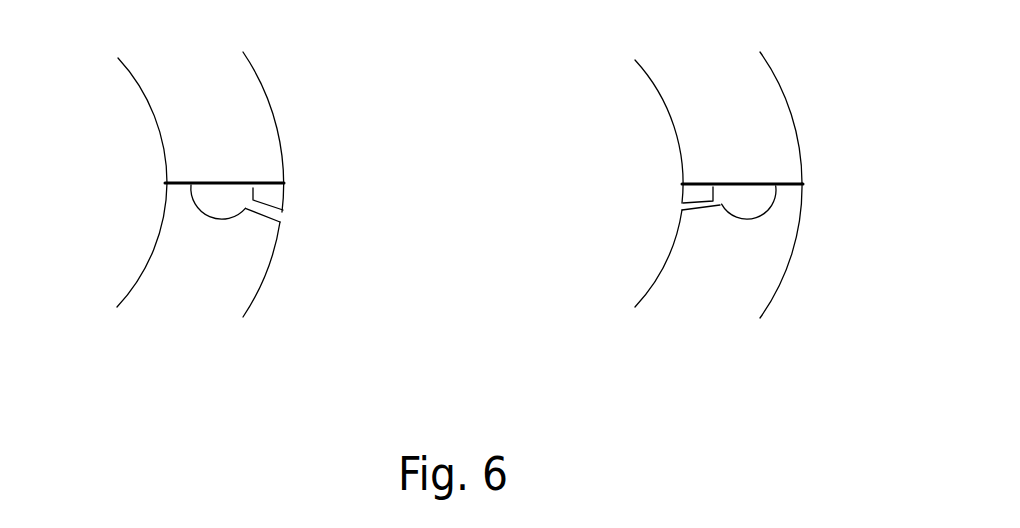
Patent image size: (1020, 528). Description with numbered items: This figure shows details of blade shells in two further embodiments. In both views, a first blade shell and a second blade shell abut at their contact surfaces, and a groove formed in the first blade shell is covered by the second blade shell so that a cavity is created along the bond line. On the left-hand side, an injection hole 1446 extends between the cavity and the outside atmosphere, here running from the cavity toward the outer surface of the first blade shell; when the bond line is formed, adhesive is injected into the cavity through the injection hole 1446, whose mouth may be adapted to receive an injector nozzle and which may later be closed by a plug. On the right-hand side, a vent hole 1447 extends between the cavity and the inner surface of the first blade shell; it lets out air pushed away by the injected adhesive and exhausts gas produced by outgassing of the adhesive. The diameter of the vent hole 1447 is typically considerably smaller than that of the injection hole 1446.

The injection hole 1446 is at (293, 223).
The vent hole 1447 is at (667, 212).